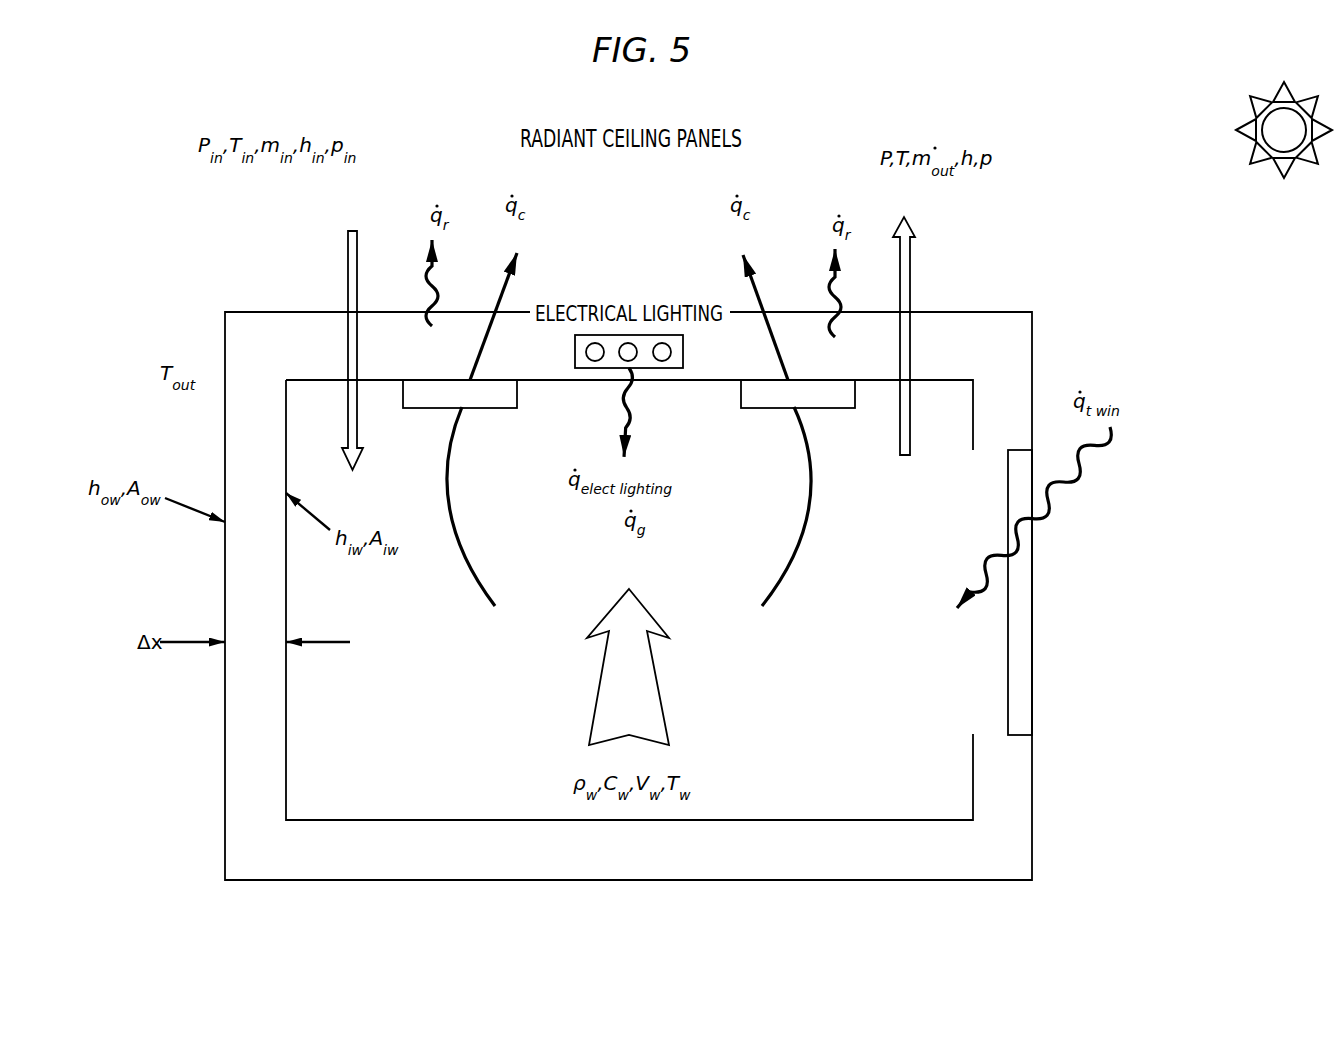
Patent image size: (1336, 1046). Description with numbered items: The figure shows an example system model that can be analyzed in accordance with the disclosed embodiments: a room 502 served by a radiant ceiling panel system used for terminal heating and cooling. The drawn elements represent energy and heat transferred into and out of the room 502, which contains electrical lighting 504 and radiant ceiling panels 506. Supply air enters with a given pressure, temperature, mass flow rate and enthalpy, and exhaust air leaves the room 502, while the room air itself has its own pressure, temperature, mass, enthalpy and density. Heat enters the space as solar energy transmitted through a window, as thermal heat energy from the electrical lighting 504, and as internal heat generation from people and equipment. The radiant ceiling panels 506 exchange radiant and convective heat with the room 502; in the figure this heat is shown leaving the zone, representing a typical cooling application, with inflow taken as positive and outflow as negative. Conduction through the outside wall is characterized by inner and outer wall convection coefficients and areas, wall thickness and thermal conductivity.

The room 502 is at (907, 525).
The electrical lighting 504 is at (677, 371).
The radiant ceiling panels 506 is at (425, 378).